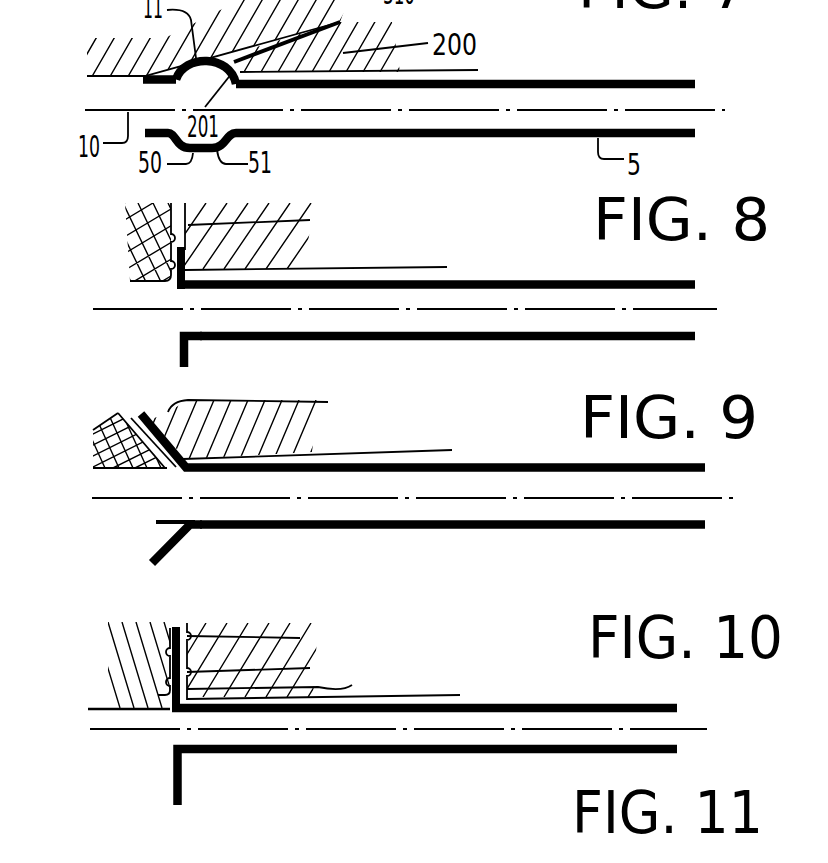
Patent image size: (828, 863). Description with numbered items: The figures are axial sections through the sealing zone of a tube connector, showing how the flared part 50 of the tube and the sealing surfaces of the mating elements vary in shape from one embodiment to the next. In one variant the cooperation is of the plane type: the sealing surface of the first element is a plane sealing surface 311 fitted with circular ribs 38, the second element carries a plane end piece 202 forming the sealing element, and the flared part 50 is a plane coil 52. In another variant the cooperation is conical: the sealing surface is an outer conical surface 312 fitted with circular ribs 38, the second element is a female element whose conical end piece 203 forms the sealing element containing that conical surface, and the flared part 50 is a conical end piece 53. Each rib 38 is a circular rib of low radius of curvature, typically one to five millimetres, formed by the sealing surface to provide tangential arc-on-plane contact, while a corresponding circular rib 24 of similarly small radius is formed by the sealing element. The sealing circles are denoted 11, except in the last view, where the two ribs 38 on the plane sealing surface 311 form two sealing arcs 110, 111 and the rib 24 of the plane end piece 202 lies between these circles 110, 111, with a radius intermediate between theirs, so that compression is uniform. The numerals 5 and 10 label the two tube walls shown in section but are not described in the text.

In FIG. 8, the second sheet metal panel 5 is at (608, 341).
In FIG. 9, the second sheet metal panel 5 is at (627, 529).
In FIG. 11, the second sheet metal panel 5 is at (450, 754).
In FIG. 8, the first sheet metal panel 10 is at (118, 310).
In FIG. 9, the first sheet metal panel 10 is at (115, 498).
In FIG. 10, the first sheet metal panel 10 is at (133, 729).
In FIG. 8, the sealing circle 11 is at (188, 254).
In FIG. 9, the sealing circle 11 is at (183, 438).
In FIG. 10, the circular rib 24 is at (310, 668).
In FIG. 8, the circular rib 38 is at (167, 258).
In FIG. 9, the circular rib 38 is at (128, 447).
In FIG. 10, the circular rib 38 is at (160, 682).
In FIG. 8, the flared part 50 is at (188, 347).
In FIG. 9, the flared part 50 is at (182, 540).
In FIG. 8, the plane coil 52 is at (231, 357).
In FIG. 9, the conical end piece 53 is at (221, 549).
In FIG. 10, the sealing arc 110 is at (300, 638).
In FIG. 10, the sealing arc 111 is at (352, 685).
In FIG. 8, the plane end piece 202 is at (305, 215).
In FIG. 10, the plane end piece 202 is at (187, 628).
In FIG. 9, the conical end piece 203 is at (245, 423).
In FIG. 8, the plane sealing surface 311 is at (168, 213).
In FIG. 10, the plane sealing surface 311 is at (170, 627).
In FIG. 9, the outer conical surface 312 is at (117, 419).